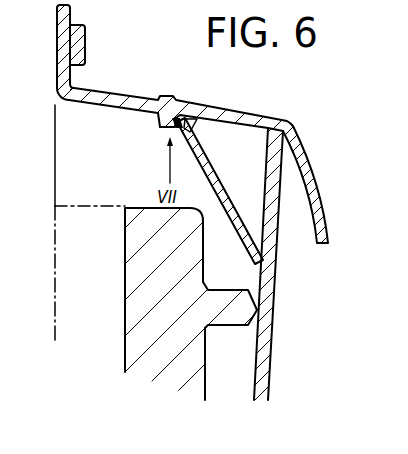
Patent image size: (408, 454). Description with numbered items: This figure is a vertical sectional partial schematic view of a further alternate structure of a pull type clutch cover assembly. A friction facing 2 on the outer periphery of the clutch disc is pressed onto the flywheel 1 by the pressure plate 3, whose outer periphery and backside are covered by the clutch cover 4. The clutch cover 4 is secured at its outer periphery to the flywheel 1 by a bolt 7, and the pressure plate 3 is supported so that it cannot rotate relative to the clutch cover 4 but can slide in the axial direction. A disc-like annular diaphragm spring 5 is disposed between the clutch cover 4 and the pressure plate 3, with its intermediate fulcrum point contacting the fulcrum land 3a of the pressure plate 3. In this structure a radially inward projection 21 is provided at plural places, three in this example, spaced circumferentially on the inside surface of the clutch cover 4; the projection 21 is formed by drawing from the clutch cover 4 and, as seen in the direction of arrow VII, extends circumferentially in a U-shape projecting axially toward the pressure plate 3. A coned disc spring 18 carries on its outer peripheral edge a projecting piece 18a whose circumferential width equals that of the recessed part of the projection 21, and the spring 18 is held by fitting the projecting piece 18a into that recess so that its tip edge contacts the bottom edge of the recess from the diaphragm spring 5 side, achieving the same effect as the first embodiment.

The flywheel 1 is at (43, 195).
The friction facing 2 is at (75, 328).
The pressure plate 3 is at (152, 367).
The fulcrum land 3a is at (235, 313).
The clutch cover 4 is at (240, 104).
The diaphragm spring 5 is at (280, 333).
The bolt 7 is at (78, 48).
The coned disc spring 18 is at (213, 167).
The projecting piece 18a is at (198, 128).
The radially inward projection 21 is at (157, 131).